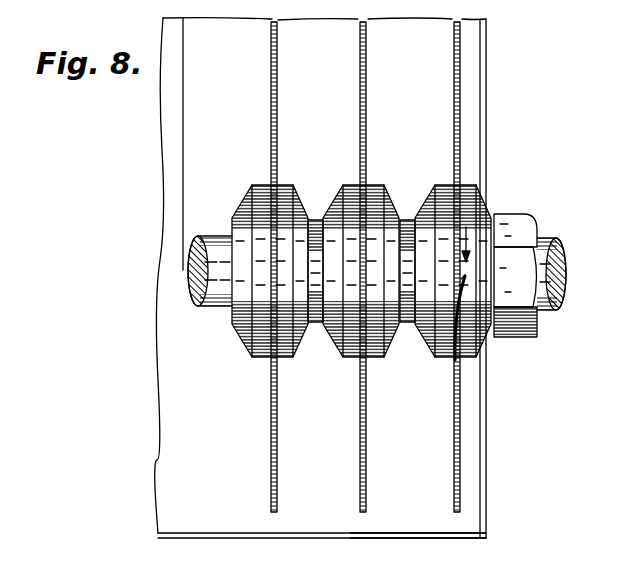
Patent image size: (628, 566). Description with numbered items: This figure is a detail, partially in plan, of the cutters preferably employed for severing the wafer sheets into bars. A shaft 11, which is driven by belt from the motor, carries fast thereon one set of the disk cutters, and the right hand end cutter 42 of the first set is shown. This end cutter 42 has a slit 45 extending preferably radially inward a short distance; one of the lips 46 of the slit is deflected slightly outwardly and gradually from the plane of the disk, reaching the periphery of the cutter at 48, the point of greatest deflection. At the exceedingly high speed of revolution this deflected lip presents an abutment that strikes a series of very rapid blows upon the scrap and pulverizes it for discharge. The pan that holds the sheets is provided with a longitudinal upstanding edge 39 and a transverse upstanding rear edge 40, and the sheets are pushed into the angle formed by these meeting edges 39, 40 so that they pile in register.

The shaft 11 is at (566, 277).
The upstanding edge 39 is at (486, 479).
The transverse upstanding rear edge 40 is at (219, 539).
The right hand end cutter 42 is at (458, 436).
The slit 45 is at (466, 274).
The lip 46 is at (488, 288).
The periphery point of greatest deflection 48 is at (418, 549).